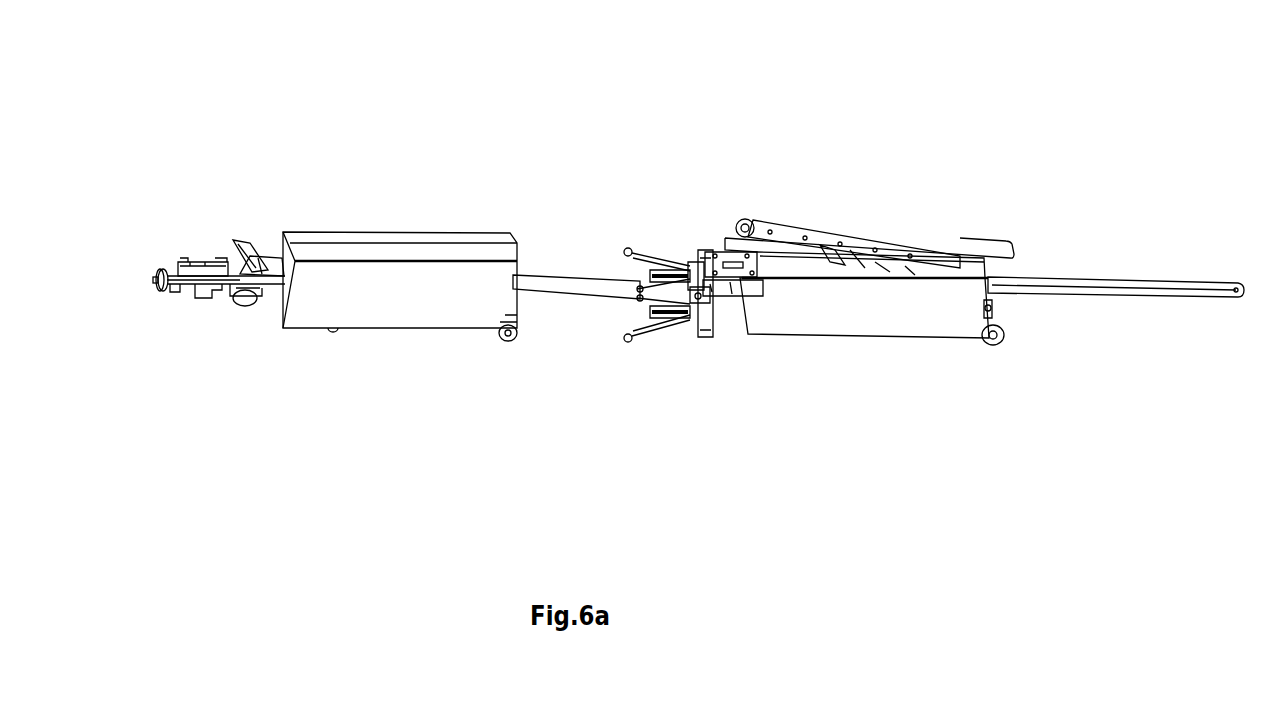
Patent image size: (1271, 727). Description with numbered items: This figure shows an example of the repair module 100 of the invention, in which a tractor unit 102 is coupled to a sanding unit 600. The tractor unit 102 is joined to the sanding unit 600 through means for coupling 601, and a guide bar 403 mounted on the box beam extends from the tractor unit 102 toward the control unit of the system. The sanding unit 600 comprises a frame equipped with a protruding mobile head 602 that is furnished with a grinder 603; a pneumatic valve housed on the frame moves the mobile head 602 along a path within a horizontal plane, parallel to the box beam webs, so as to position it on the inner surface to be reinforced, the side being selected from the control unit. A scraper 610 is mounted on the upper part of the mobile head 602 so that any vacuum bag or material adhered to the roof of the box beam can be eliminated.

The repair module 100 is at (735, 166).
The tractor unit 102 is at (830, 357).
The guide bar 403 is at (1103, 292).
The sanding unit 600 is at (380, 347).
The means for coupling 601 is at (574, 277).
The mobile head 602 is at (277, 262).
The grinder 603 is at (163, 289).
The scraper 610 is at (237, 247).